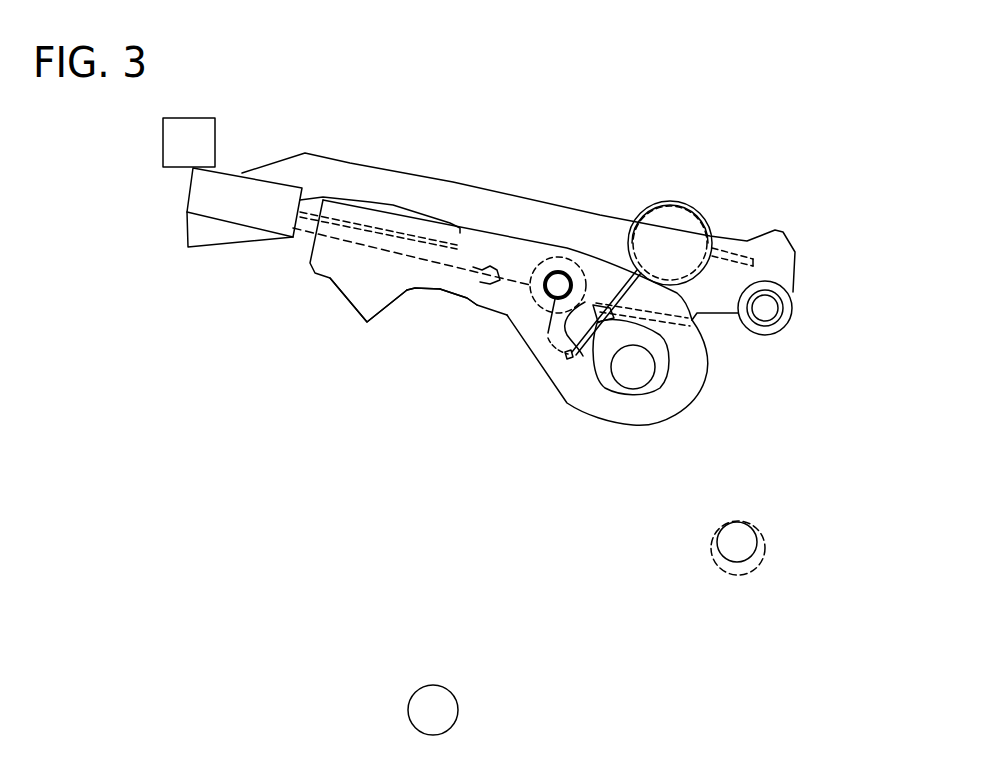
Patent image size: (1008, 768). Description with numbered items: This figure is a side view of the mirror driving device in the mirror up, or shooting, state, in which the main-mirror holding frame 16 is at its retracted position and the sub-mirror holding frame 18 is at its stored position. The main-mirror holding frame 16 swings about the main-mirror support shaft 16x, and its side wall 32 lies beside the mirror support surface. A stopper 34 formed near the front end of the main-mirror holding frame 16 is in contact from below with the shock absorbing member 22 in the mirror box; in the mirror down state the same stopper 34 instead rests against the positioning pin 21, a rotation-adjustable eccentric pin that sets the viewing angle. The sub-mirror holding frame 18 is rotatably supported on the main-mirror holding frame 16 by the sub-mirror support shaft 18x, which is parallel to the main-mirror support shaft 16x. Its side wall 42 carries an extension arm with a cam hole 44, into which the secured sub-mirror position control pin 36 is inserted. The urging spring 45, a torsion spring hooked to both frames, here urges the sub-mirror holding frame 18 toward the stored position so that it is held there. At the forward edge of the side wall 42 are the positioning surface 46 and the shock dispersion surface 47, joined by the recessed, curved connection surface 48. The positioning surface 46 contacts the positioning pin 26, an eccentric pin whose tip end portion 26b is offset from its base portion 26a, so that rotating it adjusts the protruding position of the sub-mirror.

The main-mirror holding frame 16 is at (398, 168).
The shock absorbing member 22 is at (175, 146).
The stopper 34 is at (200, 193).
The side wall 32 is at (455, 200).
The side wall 42 is at (490, 250).
The sub-mirror support shaft 18x is at (557, 272).
The urging spring 45 is at (638, 265).
The main-mirror support shaft 16x is at (768, 308).
The sub-mirror holding frame 18 is at (340, 309).
The shock dispersion surface 47 is at (380, 313).
The connection surface 48 is at (413, 290).
The positioning surface 46 is at (450, 298).
The sub-mirror position control pin 36 is at (643, 373).
The cam hole 44 is at (588, 364).
The tip end portion 26b is at (740, 537).
The base portion 26a is at (762, 538).
The positioning pin 26 is at (790, 529).
The positioning pin 21 is at (433, 692).